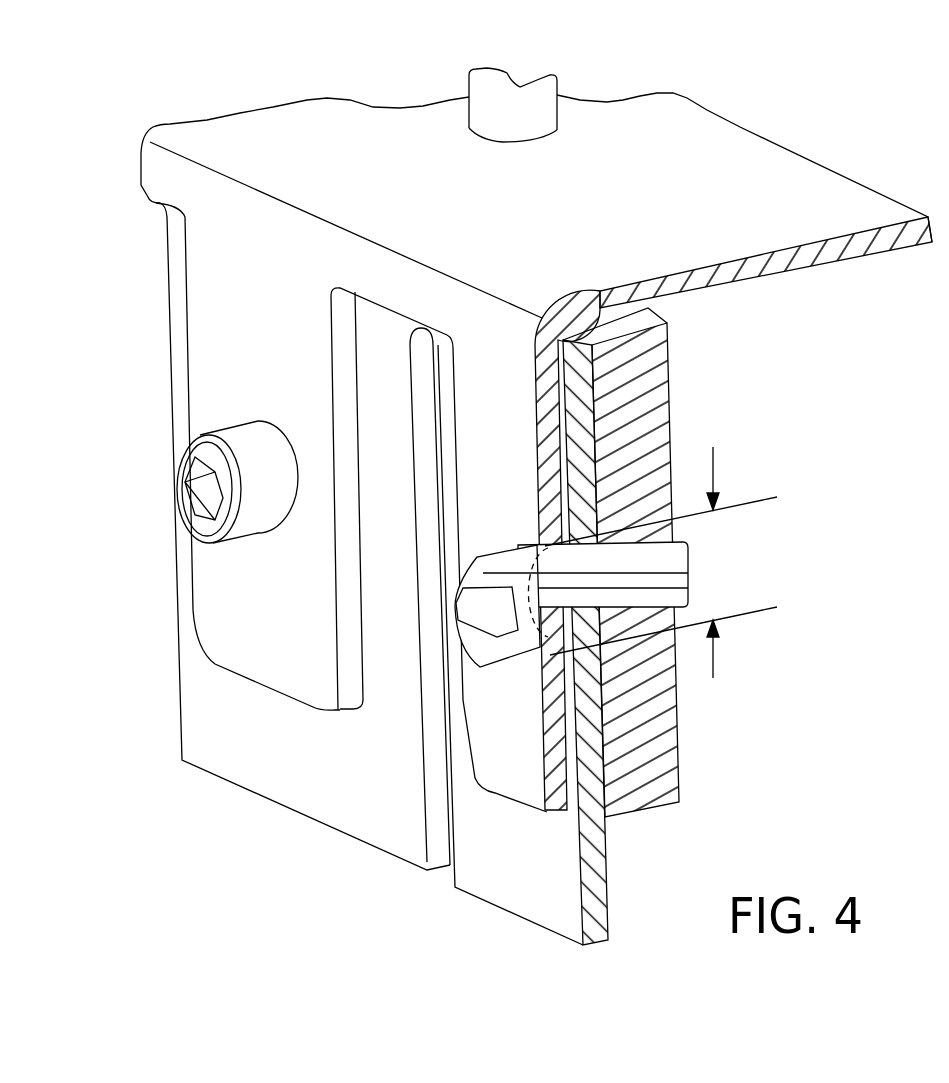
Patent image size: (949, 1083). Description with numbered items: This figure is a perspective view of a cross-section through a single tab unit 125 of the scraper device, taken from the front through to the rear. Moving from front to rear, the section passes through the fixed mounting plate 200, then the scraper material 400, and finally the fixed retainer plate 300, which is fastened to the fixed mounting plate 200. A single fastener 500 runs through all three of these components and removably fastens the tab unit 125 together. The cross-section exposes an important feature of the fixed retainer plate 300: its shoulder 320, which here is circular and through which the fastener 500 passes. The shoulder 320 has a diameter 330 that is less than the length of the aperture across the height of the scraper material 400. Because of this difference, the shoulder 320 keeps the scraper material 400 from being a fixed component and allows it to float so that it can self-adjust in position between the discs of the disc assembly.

The tab unit 125 is at (482, 922).
The fixed mounting plate 200 is at (505, 735).
The fixed retainer plate 300 is at (642, 730).
The shoulder of the fixed retainer plate 320 is at (689, 573).
The diameter of the shoulder 330 is at (718, 450).
The scraper material 400 is at (487, 852).
The fastener 500 is at (520, 567).